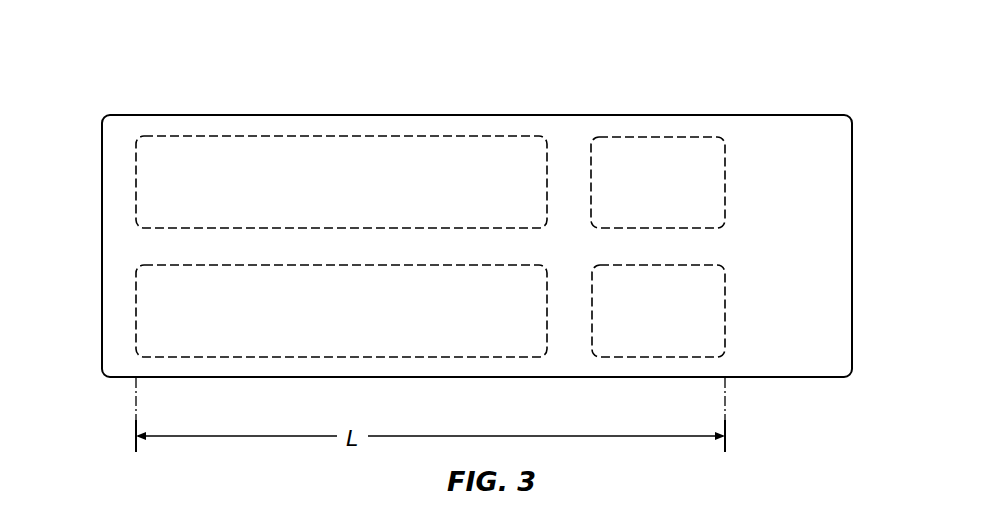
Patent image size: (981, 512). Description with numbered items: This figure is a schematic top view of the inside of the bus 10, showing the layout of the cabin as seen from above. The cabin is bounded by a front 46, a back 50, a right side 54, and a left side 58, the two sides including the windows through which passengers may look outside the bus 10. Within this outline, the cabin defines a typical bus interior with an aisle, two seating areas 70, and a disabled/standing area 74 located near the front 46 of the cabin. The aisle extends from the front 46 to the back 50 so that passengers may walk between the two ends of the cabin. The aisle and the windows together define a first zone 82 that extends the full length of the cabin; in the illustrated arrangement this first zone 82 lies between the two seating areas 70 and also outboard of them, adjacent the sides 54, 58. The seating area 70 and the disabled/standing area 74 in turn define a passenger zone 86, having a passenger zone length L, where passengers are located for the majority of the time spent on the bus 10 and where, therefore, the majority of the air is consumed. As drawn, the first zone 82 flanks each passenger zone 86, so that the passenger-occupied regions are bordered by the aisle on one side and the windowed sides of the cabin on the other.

The bus 10 is at (802, 81).
The front 46 is at (853, 236).
The back 50 is at (101, 238).
The right side 54 is at (566, 378).
The left side 58 is at (575, 114).
The seating area 70 is at (186, 185).
The disabled/standing area 74 is at (634, 175).
The first zone 82 is at (366, 128).
The passenger zone 86 is at (367, 180).